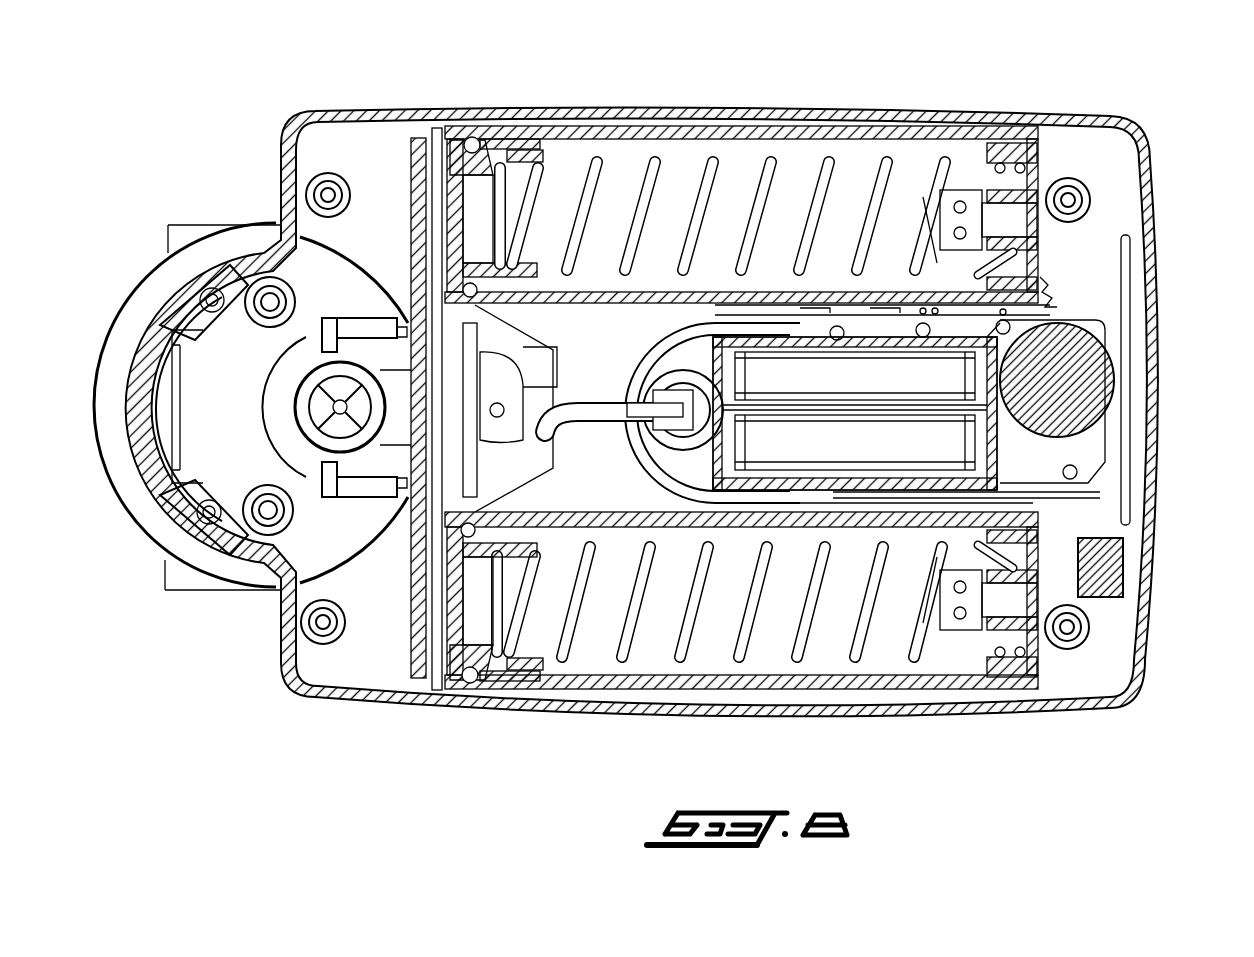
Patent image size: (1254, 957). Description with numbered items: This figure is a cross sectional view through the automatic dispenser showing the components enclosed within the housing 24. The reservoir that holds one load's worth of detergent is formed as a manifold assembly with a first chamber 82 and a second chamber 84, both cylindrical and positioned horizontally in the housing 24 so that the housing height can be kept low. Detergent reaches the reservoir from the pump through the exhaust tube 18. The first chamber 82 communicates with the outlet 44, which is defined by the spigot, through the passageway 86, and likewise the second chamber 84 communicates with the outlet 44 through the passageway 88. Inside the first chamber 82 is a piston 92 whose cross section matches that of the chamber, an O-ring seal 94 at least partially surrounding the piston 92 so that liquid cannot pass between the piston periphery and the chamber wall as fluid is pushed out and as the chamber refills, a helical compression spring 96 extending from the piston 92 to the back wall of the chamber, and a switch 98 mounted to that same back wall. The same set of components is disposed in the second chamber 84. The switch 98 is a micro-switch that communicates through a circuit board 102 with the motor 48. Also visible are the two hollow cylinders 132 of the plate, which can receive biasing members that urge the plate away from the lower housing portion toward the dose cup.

The exhaust tube 18 is at (598, 398).
The housing 24 is at (552, 705).
The outlet 44 is at (308, 405).
The motor 48 is at (1103, 362).
The first chamber 82 is at (690, 140).
The second chamber 84 is at (650, 665).
The passageway 86 is at (333, 330).
The passageway 88 is at (331, 480).
The piston 92 is at (455, 125).
The O-ring seal 94 is at (472, 130).
The spring 96 is at (600, 150).
The switch 98 is at (955, 190).
The circuit board 102 is at (1113, 562).
The hollow cylinders 132 is at (248, 318).